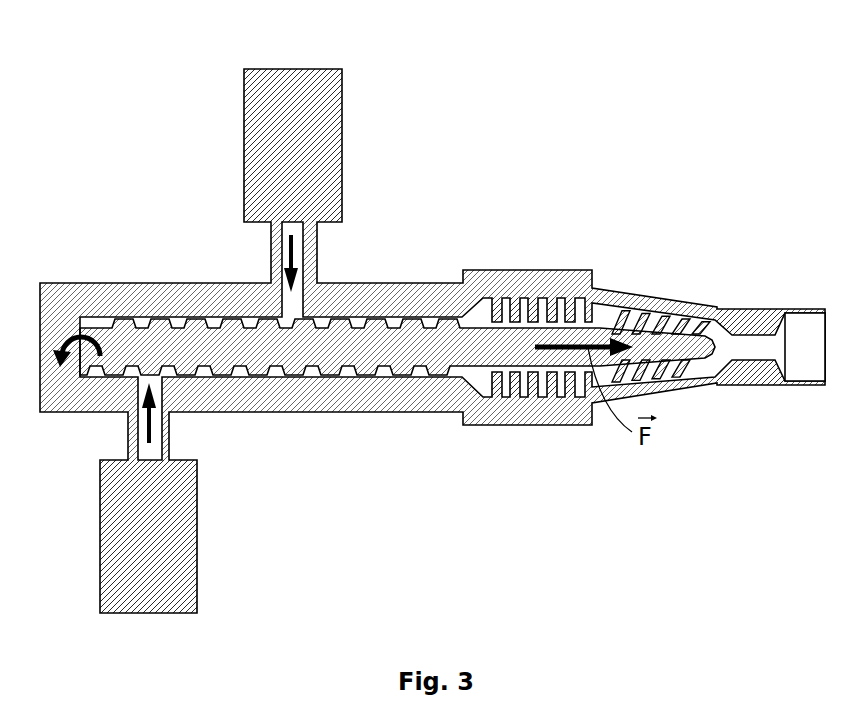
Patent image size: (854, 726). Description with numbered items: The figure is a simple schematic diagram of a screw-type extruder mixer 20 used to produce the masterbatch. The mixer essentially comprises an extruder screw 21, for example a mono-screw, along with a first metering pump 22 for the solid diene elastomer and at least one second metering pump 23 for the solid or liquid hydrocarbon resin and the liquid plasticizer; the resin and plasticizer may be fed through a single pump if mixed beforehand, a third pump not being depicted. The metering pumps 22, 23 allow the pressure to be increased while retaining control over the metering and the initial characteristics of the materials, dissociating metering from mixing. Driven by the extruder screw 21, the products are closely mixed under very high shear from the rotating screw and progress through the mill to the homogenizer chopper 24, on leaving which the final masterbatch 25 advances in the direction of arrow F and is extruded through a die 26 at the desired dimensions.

The screw-type extruder mixer 20 is at (566, 225).
The extruder screw 21 is at (303, 348).
The first metering pump 22 is at (157, 542).
The second metering pump 23 is at (283, 141).
The homogenizer chopper 24 is at (535, 398).
The final masterbatch 25 is at (768, 347).
The die 26 is at (802, 313).